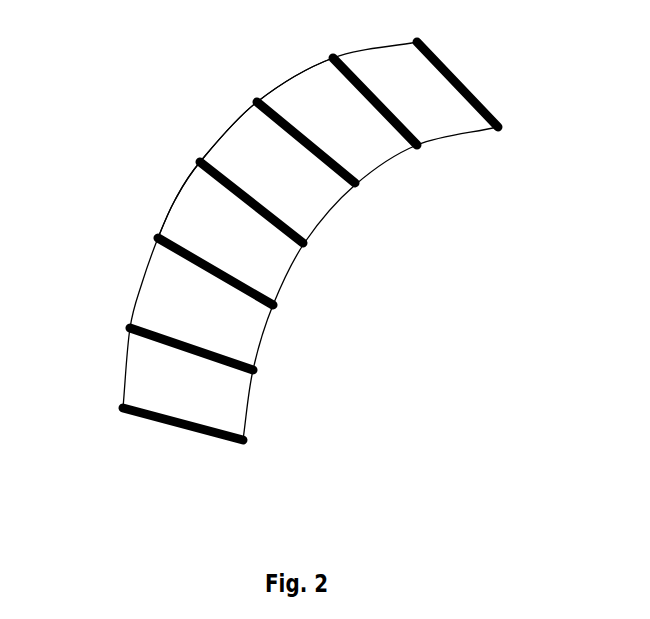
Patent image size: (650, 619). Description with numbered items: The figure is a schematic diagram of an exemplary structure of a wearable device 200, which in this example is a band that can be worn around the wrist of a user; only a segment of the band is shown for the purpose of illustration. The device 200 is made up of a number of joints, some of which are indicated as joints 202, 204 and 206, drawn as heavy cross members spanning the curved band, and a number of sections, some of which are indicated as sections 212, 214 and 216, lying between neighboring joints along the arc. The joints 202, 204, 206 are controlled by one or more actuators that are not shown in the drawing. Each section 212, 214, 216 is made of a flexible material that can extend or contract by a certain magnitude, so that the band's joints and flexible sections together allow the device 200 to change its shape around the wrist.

The wearable device 200 is at (295, 285).
The joint 202 is at (418, 148).
The joint 204 is at (357, 187).
The joint 206 is at (308, 243).
The section 212 is at (292, 78).
The section 214 is at (223, 135).
The section 216 is at (176, 198).